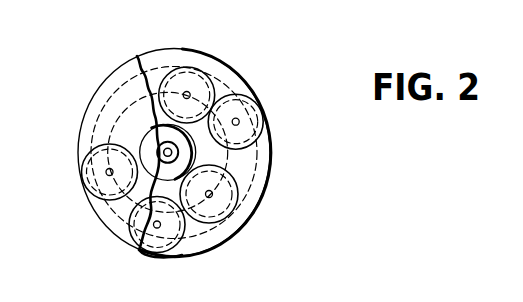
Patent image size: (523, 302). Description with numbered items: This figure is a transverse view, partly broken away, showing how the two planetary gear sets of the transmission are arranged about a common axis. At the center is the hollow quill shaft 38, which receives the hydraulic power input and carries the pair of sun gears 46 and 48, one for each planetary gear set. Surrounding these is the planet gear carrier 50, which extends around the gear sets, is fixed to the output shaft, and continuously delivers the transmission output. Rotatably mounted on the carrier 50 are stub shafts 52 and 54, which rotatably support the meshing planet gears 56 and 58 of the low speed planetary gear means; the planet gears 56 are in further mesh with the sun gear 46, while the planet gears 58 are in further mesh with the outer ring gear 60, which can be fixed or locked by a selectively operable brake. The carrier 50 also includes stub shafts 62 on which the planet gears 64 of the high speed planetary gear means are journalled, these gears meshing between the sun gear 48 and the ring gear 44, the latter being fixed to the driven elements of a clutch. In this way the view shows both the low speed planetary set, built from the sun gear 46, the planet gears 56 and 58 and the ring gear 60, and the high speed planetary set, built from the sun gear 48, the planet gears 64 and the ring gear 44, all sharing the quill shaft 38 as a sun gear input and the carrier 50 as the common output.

The quill shaft 38 is at (157, 150).
The ring gear 44 is at (123, 230).
The sun gear 46 is at (188, 150).
The sun gear 48 is at (148, 130).
The planet gear carrier 50 is at (127, 88).
The stub shaft 52 is at (187, 92).
The stub shaft 54 is at (238, 118).
The planet gear 56 is at (207, 83).
The planet gear 58 is at (250, 117).
The ring gear 60 is at (270, 143).
The stub shaft 62 is at (106, 175).
The planet gear 64 is at (95, 172).